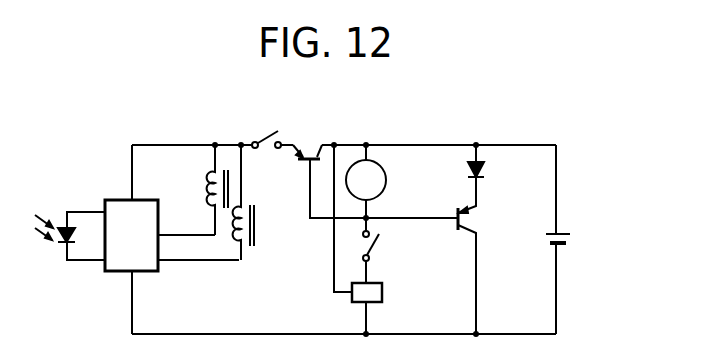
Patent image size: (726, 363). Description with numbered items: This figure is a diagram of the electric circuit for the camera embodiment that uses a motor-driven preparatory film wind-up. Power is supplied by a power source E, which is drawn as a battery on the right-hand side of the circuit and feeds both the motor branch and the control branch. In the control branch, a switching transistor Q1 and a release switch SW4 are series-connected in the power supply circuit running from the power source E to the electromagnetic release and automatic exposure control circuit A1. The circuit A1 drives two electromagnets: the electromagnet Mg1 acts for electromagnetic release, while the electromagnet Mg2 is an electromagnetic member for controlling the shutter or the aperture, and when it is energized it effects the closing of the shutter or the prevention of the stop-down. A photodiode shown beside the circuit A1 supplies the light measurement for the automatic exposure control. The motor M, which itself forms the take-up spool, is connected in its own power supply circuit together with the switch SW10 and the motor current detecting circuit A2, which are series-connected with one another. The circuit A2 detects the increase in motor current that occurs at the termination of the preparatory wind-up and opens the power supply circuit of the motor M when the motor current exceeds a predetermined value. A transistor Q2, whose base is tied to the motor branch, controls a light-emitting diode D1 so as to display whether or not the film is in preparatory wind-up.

The electromagnetic release and automatic exposure control circuit A1 is at (131, 235).
The motor current detecting circuit A2 is at (382, 291).
The electromagnet Mg1 is at (257, 222).
The electromagnet Mg2 is at (213, 184).
The release switch SW4 is at (269, 130).
The switch SW10 is at (372, 242).
The switching transistor Q1 is at (306, 148).
The transistor Q2 is at (467, 218).
The light-emitting diode D1 is at (485, 168).
The motor M is at (366, 181).
The power source E is at (571, 240).